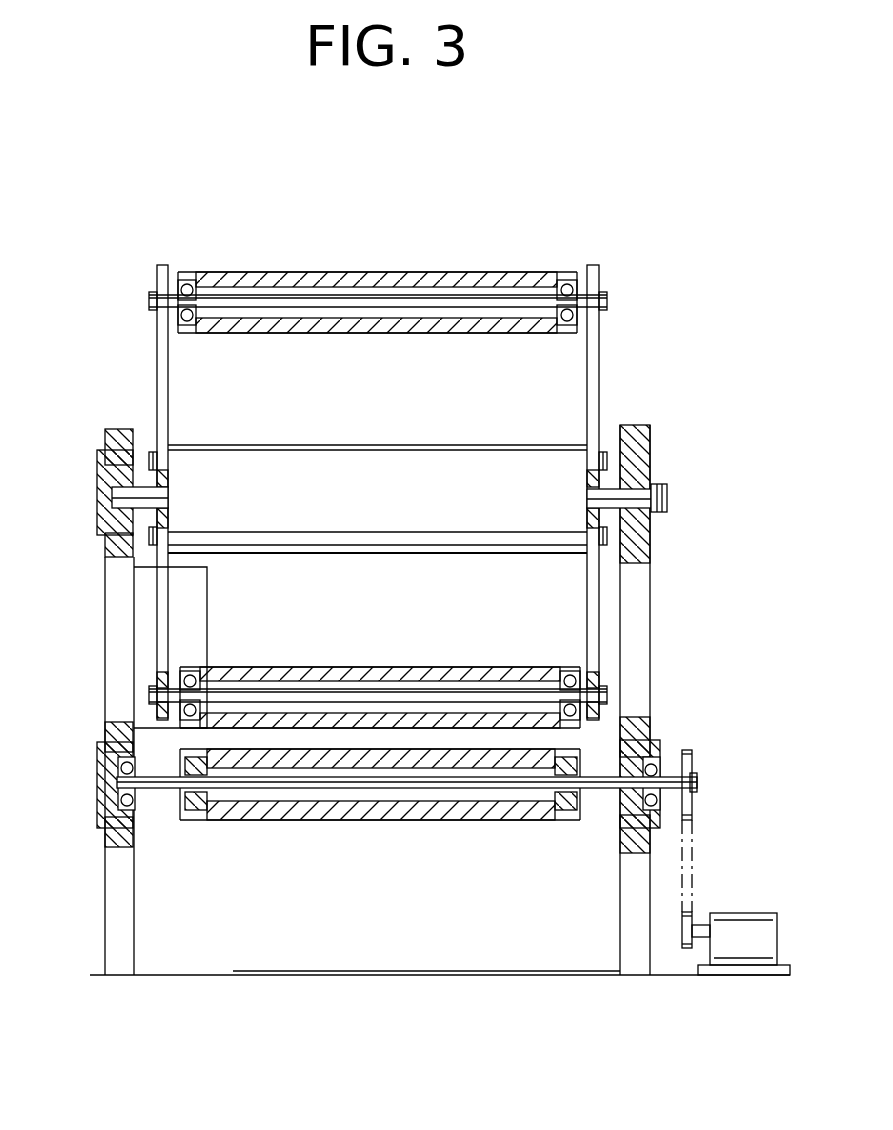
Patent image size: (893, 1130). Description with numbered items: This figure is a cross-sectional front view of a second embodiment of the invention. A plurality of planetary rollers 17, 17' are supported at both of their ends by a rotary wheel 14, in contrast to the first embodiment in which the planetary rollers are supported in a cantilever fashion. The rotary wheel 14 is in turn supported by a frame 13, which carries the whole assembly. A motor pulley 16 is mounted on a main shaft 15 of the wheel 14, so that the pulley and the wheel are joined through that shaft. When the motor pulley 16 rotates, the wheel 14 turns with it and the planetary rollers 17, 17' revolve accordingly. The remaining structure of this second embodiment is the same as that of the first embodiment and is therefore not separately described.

The frame 13 is at (651, 591).
The rotary wheel 14 is at (599, 341).
The main shaft 15 is at (630, 496).
The motor pulley 16 is at (518, 461).
The planetary roller 17 is at (378, 263).
The planetary roller 17' is at (446, 673).